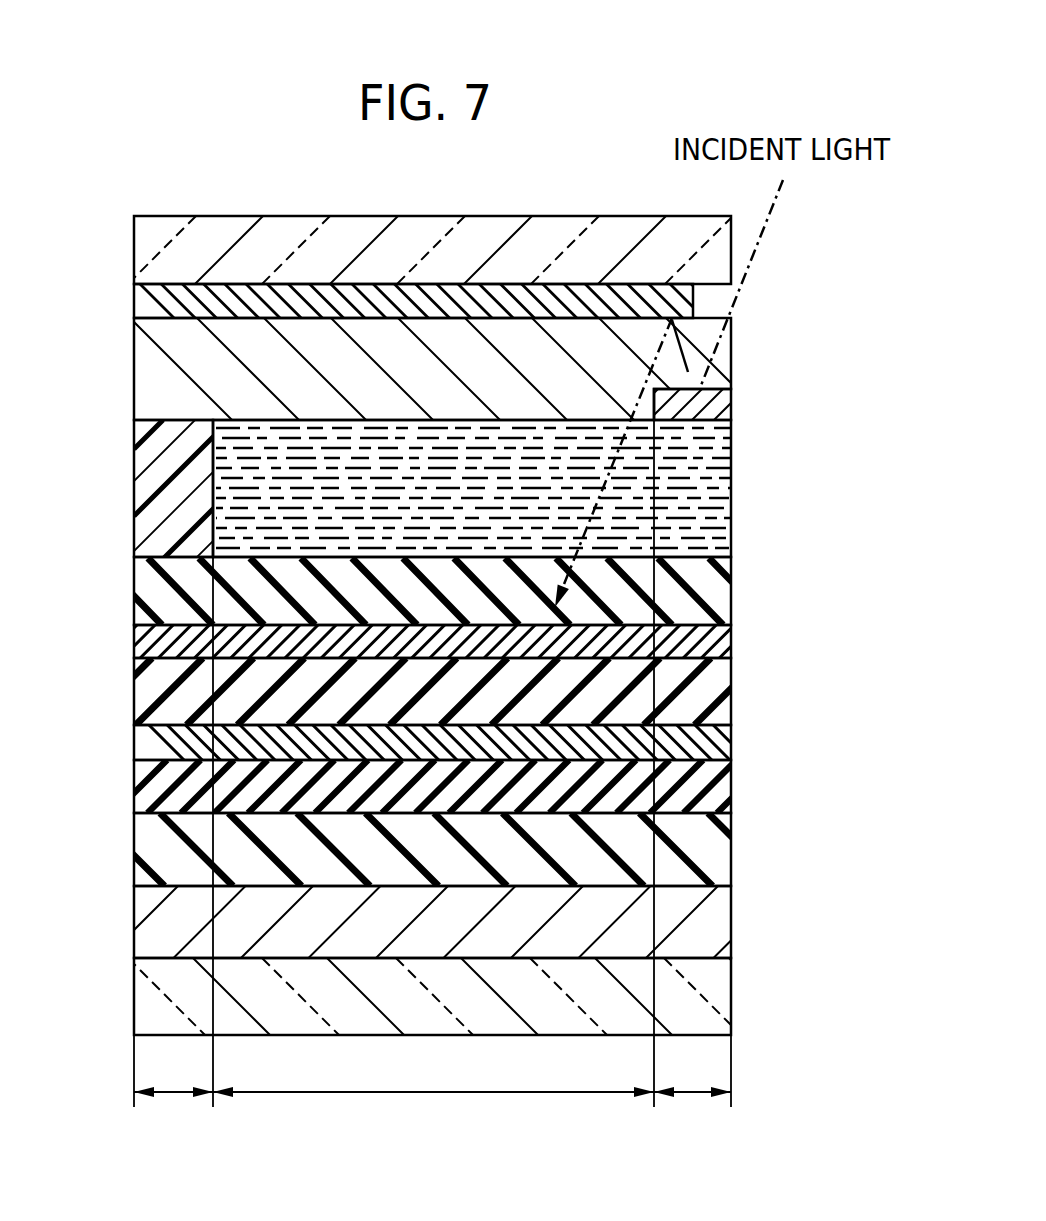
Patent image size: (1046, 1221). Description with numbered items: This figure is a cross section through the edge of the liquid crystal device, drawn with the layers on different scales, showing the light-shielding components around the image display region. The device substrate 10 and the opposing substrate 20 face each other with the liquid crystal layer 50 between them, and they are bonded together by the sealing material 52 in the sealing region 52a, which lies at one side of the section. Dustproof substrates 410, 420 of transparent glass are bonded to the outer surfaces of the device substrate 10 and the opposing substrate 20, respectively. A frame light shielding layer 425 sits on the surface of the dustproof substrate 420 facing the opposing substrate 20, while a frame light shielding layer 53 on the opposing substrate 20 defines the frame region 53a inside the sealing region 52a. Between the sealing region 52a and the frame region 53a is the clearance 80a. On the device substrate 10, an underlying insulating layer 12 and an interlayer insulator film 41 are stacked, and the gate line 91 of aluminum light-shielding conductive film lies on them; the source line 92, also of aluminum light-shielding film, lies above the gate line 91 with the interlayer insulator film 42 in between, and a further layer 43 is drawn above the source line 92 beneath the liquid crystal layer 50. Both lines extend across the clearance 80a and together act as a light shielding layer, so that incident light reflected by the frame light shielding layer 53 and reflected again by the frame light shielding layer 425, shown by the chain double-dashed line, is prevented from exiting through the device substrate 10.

The dustproof substrate 420 is at (134, 243).
The frame light shielding layer 425 is at (134, 287).
The opposing substrate 20 is at (134, 372).
The frame light shielding layer 53 is at (731, 404).
The sealing material 52 is at (134, 486).
The liquid crystal layer 50 is at (731, 499).
The third dielectric layer 43 is at (731, 600).
The source line 92 is at (134, 636).
The interlayer insulator film 42 is at (731, 684).
The gate line 91 is at (134, 748).
The interlayer insulator film 41 is at (731, 794).
The underlying insulating layer 12 is at (731, 849).
The device substrate 10 is at (731, 924).
The dustproof substrate 410 is at (731, 996).
The sealing region 52a is at (175, 1094).
The clearance 80a is at (435, 1094).
The frame region 53a is at (690, 1094).